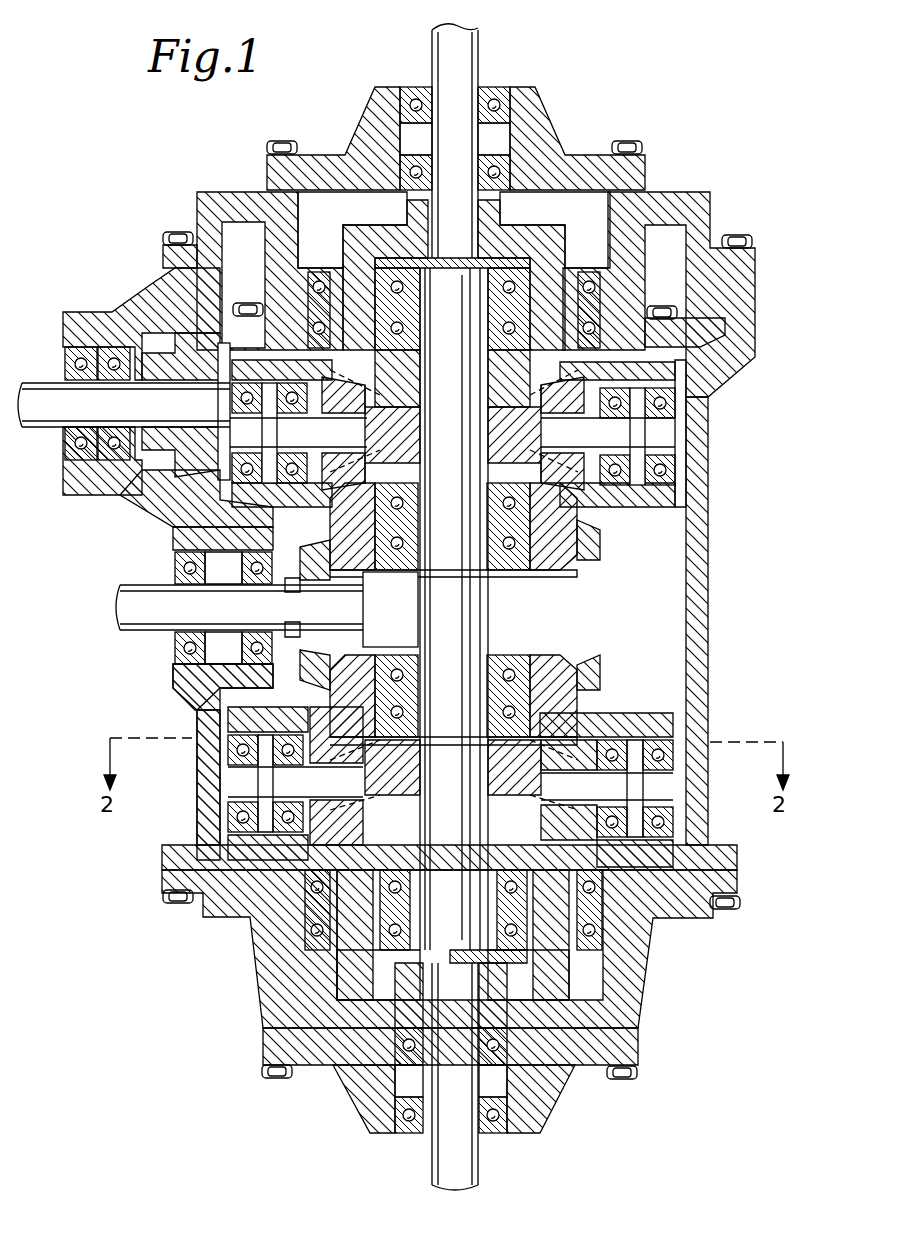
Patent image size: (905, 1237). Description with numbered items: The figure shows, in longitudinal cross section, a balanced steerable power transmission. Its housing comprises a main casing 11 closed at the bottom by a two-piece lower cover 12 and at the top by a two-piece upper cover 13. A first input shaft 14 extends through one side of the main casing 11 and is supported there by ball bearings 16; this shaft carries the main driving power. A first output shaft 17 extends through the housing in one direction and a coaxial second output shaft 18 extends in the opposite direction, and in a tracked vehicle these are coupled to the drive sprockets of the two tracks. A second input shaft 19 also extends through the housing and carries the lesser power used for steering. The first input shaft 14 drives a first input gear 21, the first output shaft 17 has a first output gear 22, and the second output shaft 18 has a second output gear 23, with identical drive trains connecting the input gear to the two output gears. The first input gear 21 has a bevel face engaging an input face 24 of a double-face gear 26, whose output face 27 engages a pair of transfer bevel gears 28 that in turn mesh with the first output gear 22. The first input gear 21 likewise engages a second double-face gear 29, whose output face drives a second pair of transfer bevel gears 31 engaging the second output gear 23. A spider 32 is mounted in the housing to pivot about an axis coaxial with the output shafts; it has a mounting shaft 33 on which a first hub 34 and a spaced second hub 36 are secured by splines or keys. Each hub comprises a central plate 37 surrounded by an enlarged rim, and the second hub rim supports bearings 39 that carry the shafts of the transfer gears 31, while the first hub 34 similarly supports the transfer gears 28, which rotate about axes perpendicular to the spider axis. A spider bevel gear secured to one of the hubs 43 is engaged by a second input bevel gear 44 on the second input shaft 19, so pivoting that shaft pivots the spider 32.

The main casing 11 is at (710, 585).
The lower cover 12 is at (643, 998).
The upper cover 13 is at (648, 178).
The first input shaft 14 is at (155, 615).
The ball bearings 16 is at (250, 668).
The first output shaft 17 is at (478, 52).
The second output shaft 18 is at (480, 1168).
The second input shaft 19 is at (60, 407).
The first input gear 21 is at (370, 650).
The first output gear 22 is at (555, 230).
The second output gear 23 is at (540, 995).
The input face 24 is at (313, 567).
The double-face gear 26 is at (568, 530).
The output face 27 is at (470, 485).
The transfer bevel gears 28 is at (370, 398).
The second double-face gear 29 is at (560, 690).
The second transfer bevel gears 31 is at (365, 830).
The spider 32 is at (490, 632).
The mounting shaft 33 is at (465, 603).
The first hub 34 is at (665, 378).
The second hub 36 is at (650, 715).
The central plate 37 is at (495, 445).
The bearings 39 is at (620, 735).
The hub 43 is at (150, 340).
The second input bevel gear 44 is at (120, 300).